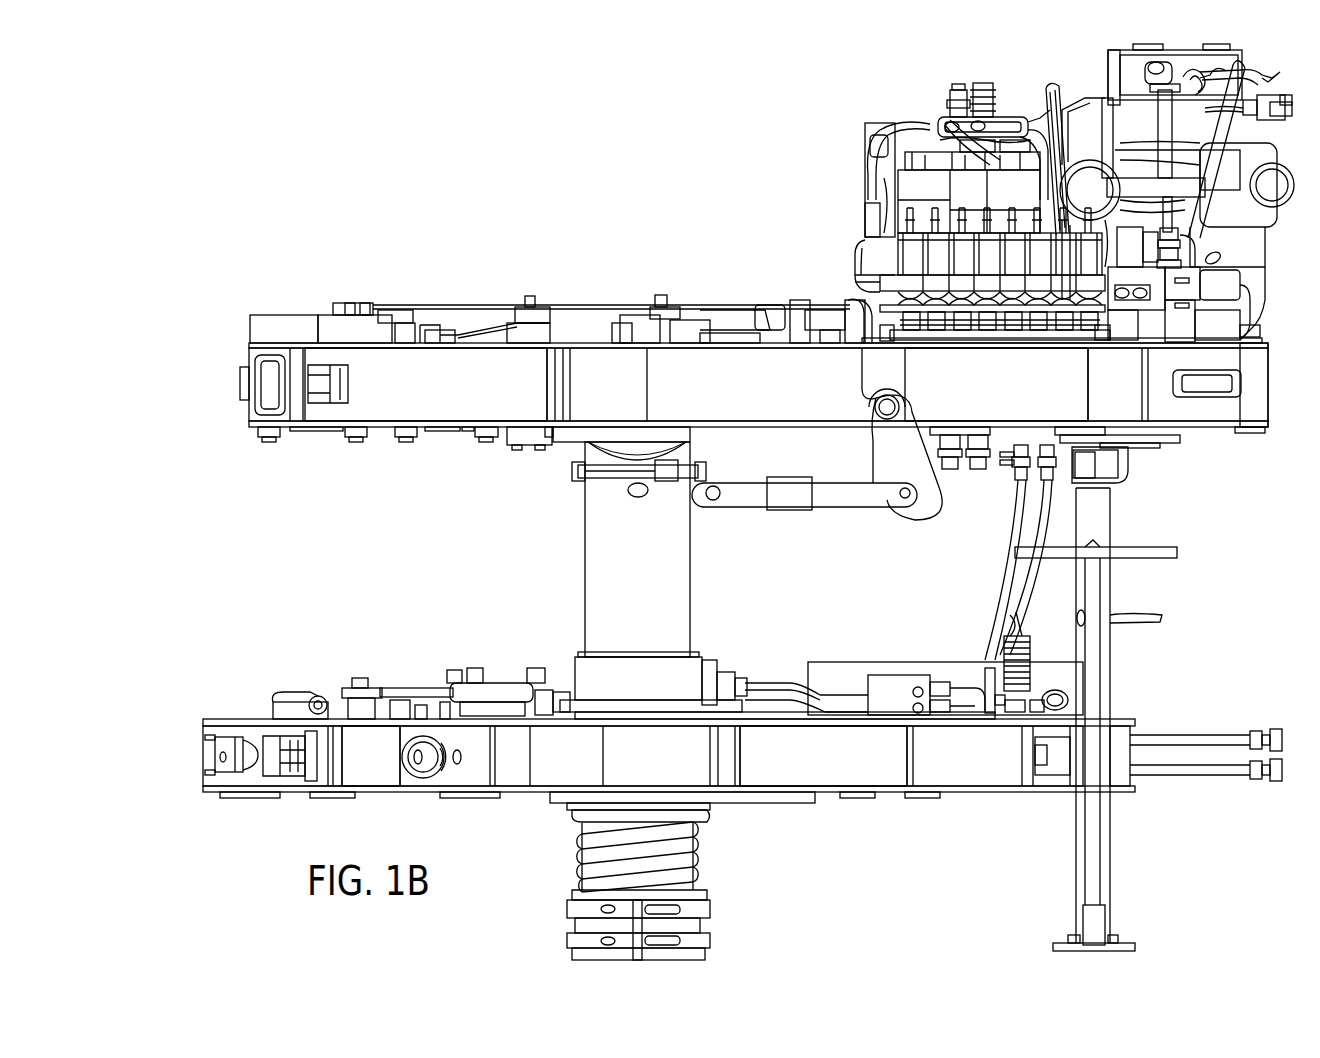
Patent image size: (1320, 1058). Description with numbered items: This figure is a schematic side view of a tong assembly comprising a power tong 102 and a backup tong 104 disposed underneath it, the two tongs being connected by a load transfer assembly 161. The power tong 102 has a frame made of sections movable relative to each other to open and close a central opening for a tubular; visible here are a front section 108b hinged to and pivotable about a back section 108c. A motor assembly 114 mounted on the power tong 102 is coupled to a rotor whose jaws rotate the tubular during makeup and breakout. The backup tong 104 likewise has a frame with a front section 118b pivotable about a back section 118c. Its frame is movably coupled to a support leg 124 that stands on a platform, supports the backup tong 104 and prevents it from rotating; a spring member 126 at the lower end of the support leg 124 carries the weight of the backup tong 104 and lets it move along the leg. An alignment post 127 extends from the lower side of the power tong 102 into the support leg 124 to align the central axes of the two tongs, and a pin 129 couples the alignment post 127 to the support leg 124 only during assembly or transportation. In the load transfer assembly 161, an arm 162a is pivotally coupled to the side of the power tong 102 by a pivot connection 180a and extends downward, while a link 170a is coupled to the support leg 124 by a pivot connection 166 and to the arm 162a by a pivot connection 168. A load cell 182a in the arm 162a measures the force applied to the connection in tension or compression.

The power tong 102 is at (222, 362).
The backup tong 104 is at (180, 755).
The front section 108b is at (450, 397).
The back section 108c is at (1003, 397).
The motor assembly 114 is at (1068, 80).
The front section 118b is at (397, 766).
The back section 118c is at (880, 766).
The support leg 124 is at (663, 603).
The spring member 126 is at (700, 862).
The alignment post 127 is at (585, 452).
The pin 129 is at (632, 495).
The load transfer assembly 161 is at (490, 575).
The arm 162a is at (935, 495).
The pivot connection 166 is at (713, 500).
The pivot connection 168 is at (905, 500).
The link 170a is at (845, 495).
The pivot connection 180a is at (880, 405).
The load cell 182a is at (785, 512).